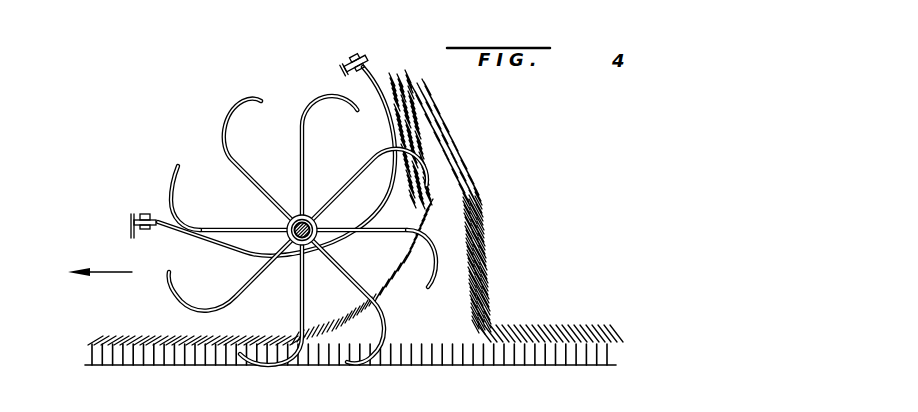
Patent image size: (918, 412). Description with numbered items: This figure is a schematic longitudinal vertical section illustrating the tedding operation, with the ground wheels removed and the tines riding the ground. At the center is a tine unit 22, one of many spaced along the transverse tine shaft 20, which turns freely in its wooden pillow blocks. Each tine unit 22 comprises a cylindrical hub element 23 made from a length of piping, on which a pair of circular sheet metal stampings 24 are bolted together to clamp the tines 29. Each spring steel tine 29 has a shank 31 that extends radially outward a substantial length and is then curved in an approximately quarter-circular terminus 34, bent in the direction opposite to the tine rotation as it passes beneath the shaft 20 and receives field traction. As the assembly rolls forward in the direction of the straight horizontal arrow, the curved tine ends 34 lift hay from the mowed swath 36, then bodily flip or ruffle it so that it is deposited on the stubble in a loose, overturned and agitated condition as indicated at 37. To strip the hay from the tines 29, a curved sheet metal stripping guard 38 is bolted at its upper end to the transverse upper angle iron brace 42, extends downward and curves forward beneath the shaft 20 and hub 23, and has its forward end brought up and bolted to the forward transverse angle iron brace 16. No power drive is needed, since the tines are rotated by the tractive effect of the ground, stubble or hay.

The angle iron brace 16 is at (132, 214).
The tine shaft 20 is at (303, 248).
The tine unit 22 is at (312, 210).
The hub element 23 is at (294, 250).
The tine mounting stamping 24 is at (320, 227).
The tine 29 is at (253, 170).
The tine shank 31 is at (228, 227).
The curved tine terminus 34 is at (180, 208).
The mowed swath 36 is at (150, 338).
The overturned hay deposit 37 is at (547, 323).
The stripping guard 38 is at (393, 191).
The upper angle iron brace 42 is at (350, 60).